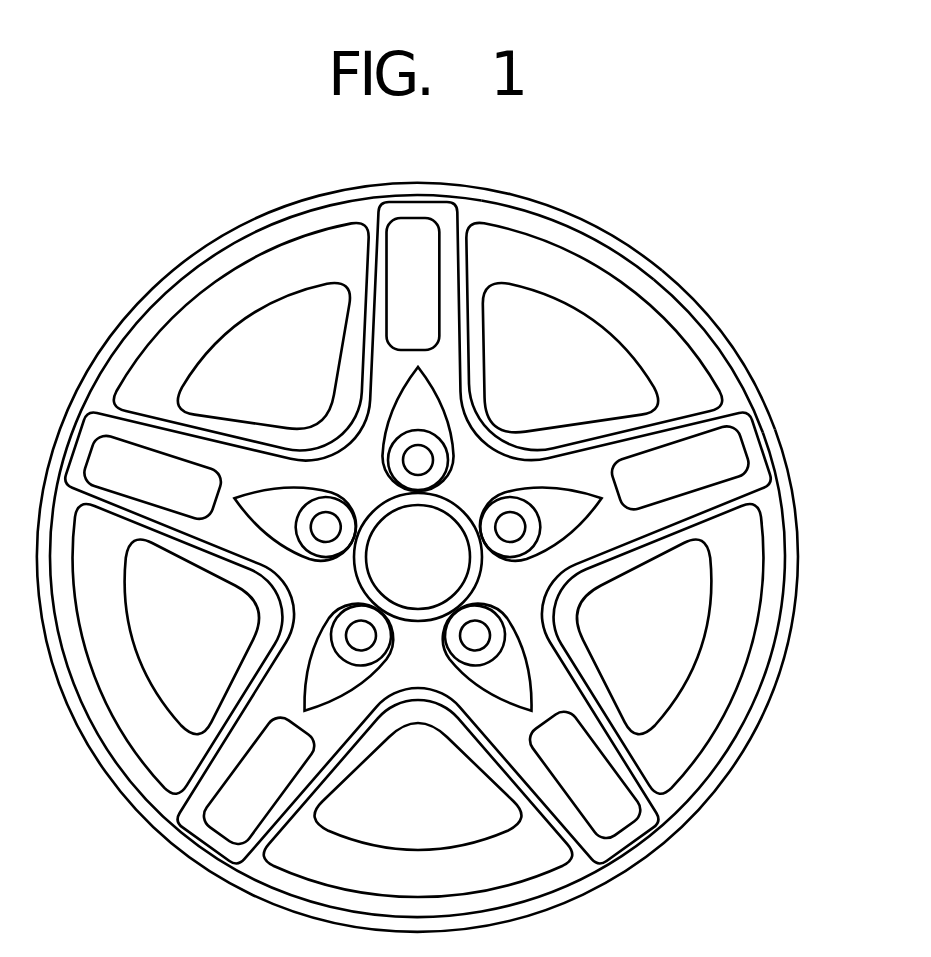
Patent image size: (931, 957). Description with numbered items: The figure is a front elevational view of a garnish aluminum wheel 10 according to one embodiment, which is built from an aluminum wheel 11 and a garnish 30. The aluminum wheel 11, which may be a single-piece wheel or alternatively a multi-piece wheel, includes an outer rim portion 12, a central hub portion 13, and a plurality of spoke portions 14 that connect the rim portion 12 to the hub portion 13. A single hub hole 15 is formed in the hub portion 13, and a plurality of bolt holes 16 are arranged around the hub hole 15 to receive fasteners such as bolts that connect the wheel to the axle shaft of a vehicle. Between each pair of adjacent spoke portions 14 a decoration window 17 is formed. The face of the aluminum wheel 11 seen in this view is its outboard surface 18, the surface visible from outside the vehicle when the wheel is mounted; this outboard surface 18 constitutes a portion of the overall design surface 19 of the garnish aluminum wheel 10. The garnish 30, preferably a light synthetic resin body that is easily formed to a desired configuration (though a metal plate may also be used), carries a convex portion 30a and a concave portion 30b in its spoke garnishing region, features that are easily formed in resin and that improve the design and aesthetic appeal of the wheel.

The garnish aluminum wheel 10 is at (586, 214).
The aluminum wheel 11 is at (543, 230).
The rim portion 12 is at (708, 323).
The hub portion 13 is at (450, 505).
The spoke portions 14 is at (470, 338).
The hub hole 15 is at (379, 525).
The bolt holes 16 is at (475, 632).
The decoration window 17 is at (507, 292).
The outboard surface 18 is at (718, 372).
The design surface 19 is at (668, 440).
The garnish 30 is at (412, 210).
The convex portion 30a is at (402, 243).
The concave portion 30b is at (408, 402).